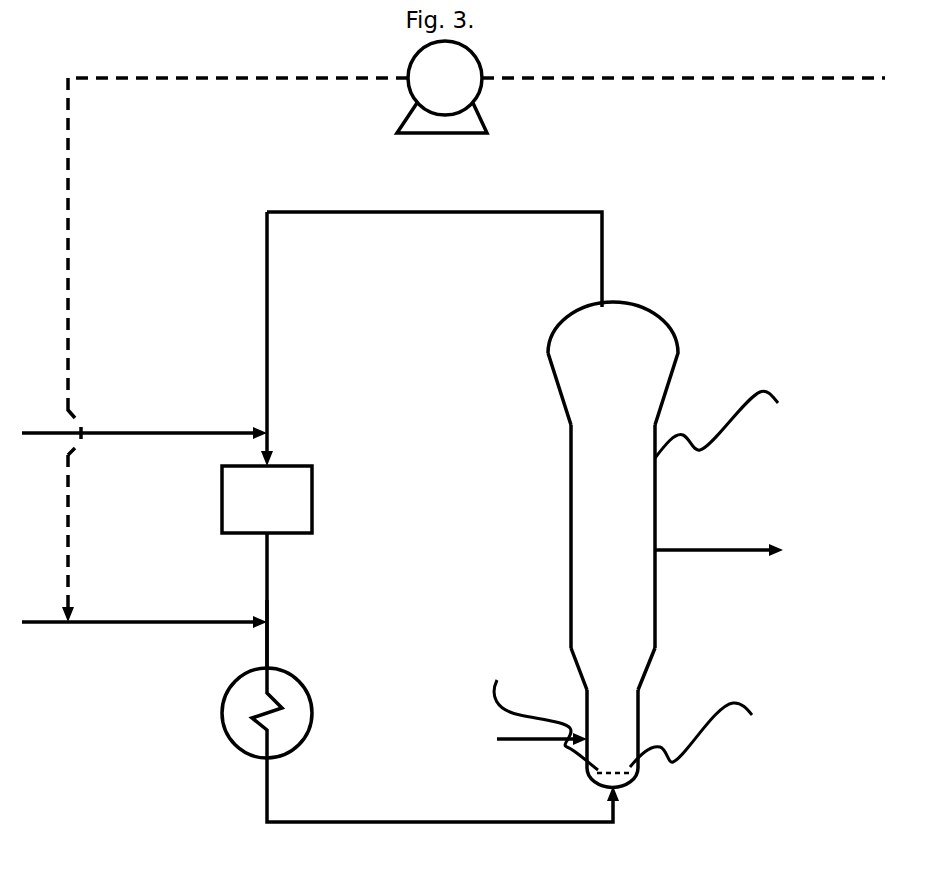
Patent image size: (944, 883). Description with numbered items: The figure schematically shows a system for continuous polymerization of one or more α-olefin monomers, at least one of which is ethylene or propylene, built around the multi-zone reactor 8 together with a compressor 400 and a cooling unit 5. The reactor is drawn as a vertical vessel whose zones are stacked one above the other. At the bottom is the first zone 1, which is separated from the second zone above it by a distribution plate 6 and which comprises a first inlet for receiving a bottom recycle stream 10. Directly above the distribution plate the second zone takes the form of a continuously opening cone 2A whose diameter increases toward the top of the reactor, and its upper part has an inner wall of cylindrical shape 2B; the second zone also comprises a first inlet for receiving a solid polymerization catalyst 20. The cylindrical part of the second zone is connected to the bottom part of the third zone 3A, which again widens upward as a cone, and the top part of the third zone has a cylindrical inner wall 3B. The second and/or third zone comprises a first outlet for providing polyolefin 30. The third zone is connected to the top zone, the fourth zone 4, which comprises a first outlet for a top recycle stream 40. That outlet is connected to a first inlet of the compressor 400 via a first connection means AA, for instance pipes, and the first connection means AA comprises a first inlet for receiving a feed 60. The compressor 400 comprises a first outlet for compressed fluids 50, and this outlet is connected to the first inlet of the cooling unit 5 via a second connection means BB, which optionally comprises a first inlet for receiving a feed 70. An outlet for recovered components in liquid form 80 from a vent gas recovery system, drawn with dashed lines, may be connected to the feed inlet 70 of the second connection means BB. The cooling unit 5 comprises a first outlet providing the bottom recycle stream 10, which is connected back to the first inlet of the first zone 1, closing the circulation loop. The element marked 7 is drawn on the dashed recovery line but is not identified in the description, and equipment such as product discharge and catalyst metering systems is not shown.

The first zone 1 is at (611, 778).
The continuously opening cone 2A is at (546, 715).
The cylindrical inner wall of the second zone 2B is at (612, 729).
The bottom part of the third zone 3A is at (613, 669).
The cylindrical inner wall of the third zone 3B is at (613, 536).
The fourth zone 4 is at (613, 363).
The cooling unit 5 is at (267, 713).
The distribution plate 6 is at (697, 735).
The controller / pump 7 is at (442, 87).
The multi-zone reactor 8 is at (728, 424).
The bottom recycle stream 10 is at (443, 803).
The inlet for receiving a solid polymerization catalyst 20 is at (542, 748).
The outlet for providing polyolefin 30 is at (719, 562).
The top recycle stream 40 is at (434, 240).
The outlet for compressed fluids 50 is at (282, 633).
The feed 60 is at (144, 418).
The feed 70 is at (144, 609).
The outlet for recovered components 80 is at (473, 350).
The compressor 400 is at (267, 499).
The first connection means AA is at (280, 339).
The second connection means BB is at (285, 600).